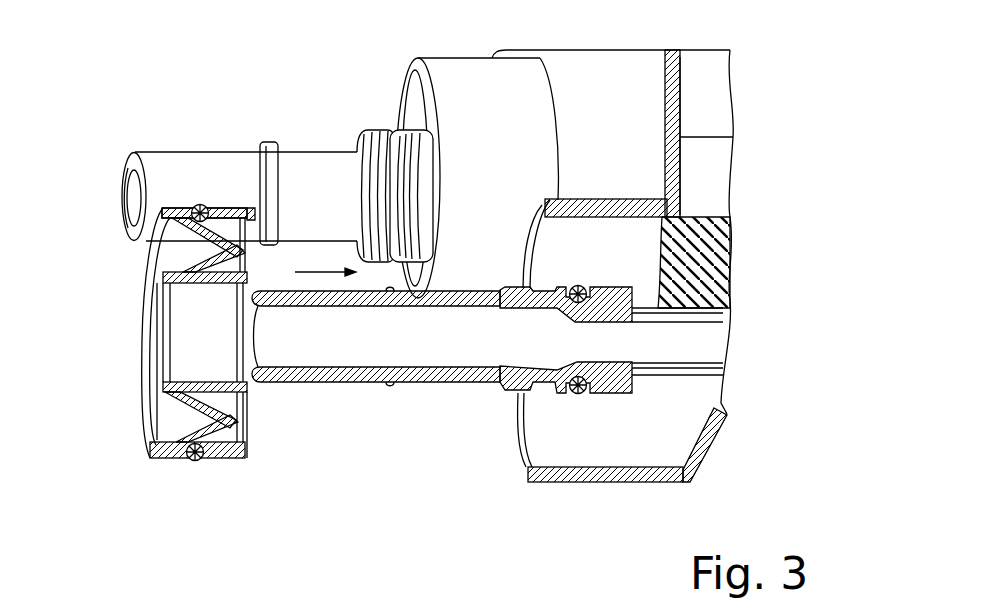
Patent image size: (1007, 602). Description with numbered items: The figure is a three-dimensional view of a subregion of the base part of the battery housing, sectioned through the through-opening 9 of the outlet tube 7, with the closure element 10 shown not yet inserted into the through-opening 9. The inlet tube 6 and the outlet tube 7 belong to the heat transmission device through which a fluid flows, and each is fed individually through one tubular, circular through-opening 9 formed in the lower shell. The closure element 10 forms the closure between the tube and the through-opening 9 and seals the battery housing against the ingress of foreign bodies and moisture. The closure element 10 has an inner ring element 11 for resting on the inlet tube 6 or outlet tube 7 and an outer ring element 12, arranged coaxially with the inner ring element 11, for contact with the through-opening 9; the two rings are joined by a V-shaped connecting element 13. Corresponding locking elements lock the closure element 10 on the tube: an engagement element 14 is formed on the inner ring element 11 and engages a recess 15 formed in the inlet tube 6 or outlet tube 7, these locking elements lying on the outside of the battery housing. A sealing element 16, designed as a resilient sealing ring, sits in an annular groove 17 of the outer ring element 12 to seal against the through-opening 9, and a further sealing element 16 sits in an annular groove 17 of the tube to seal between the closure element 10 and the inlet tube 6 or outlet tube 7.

The inlet tube 6 is at (322, 165).
The outlet tube 7 is at (355, 388).
The through-opening 9 is at (473, 85).
The closure element 10 is at (130, 408).
The inner ring element 11 is at (185, 264).
The outer ring element 12 is at (228, 207).
The V-shaped connecting element 13 is at (243, 240).
The engagement element 14 is at (165, 283).
The recess 15 is at (394, 140).
The sealing element 16 is at (200, 205).
The annular groove 17 is at (162, 238).